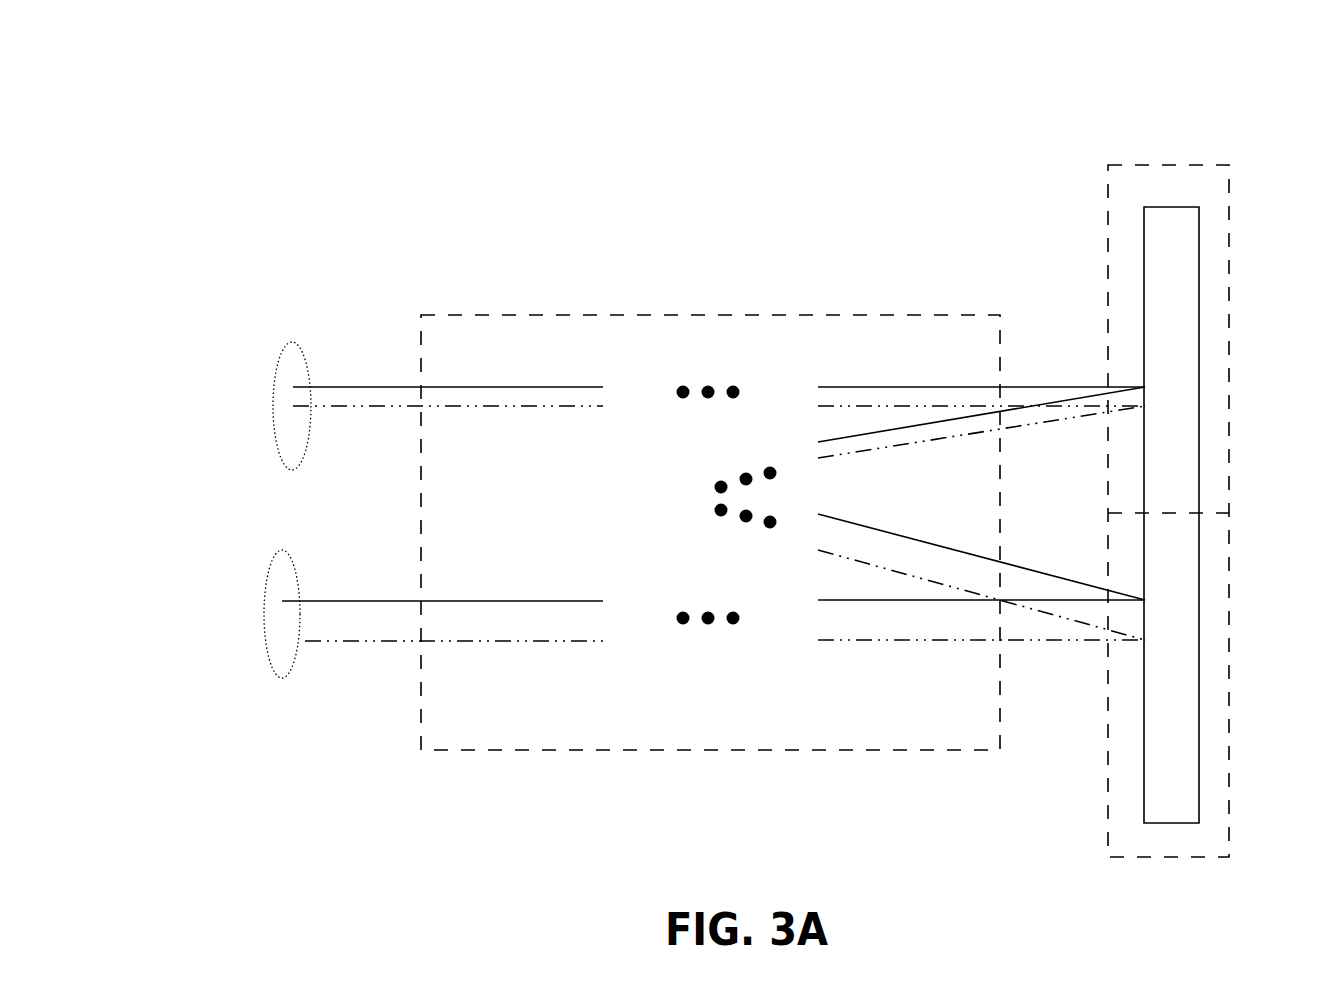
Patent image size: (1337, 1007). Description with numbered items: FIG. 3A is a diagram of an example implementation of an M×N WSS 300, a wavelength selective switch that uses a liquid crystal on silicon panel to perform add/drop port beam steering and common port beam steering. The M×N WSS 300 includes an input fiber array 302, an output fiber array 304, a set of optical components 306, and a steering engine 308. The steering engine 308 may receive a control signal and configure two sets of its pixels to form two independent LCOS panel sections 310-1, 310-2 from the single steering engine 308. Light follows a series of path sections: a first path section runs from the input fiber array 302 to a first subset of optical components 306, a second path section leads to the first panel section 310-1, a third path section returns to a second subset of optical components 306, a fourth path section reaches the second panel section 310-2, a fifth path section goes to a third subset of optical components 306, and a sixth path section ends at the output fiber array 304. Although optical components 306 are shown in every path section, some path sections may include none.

The M×N WSS 300 is at (230, 52).
The input fiber array 302 is at (281, 642).
The output fiber array 304 is at (288, 385).
The set of optical components 306 is at (710, 517).
The steering engine 308 is at (1205, 493).
The first panel section 310-1 is at (1223, 668).
The second panel section 310-2 is at (1205, 360).